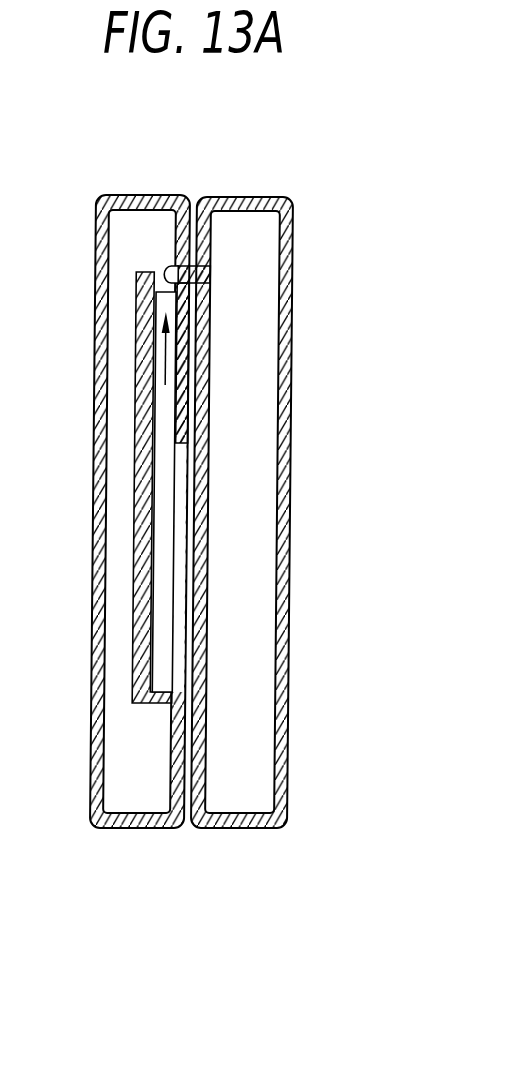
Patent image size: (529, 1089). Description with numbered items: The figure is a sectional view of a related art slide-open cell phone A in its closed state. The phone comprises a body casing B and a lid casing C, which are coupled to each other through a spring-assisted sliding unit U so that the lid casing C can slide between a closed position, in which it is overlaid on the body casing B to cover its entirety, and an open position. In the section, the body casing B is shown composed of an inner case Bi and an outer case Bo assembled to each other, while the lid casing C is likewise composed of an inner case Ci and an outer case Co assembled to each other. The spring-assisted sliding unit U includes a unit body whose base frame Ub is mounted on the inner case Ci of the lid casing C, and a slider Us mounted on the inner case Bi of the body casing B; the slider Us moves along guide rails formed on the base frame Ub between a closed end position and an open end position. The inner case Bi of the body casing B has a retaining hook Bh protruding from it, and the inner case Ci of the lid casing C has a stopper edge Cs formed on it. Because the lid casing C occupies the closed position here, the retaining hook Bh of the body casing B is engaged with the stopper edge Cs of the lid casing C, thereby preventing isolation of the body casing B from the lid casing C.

The slide-open cell phone A is at (191, 513).
The body casing B is at (275, 562).
The lid casing C is at (146, 551).
The outer case Bo is at (292, 520).
The inner case Bi is at (210, 829).
The outer case Co is at (93, 508).
The inner case Ci is at (142, 829).
The retaining hook Bh is at (172, 272).
The stopper edge Cs is at (197, 264).
The slider Us is at (193, 357).
The base frame Ub is at (153, 381).
The spring-assisted sliding unit U is at (150, 577).